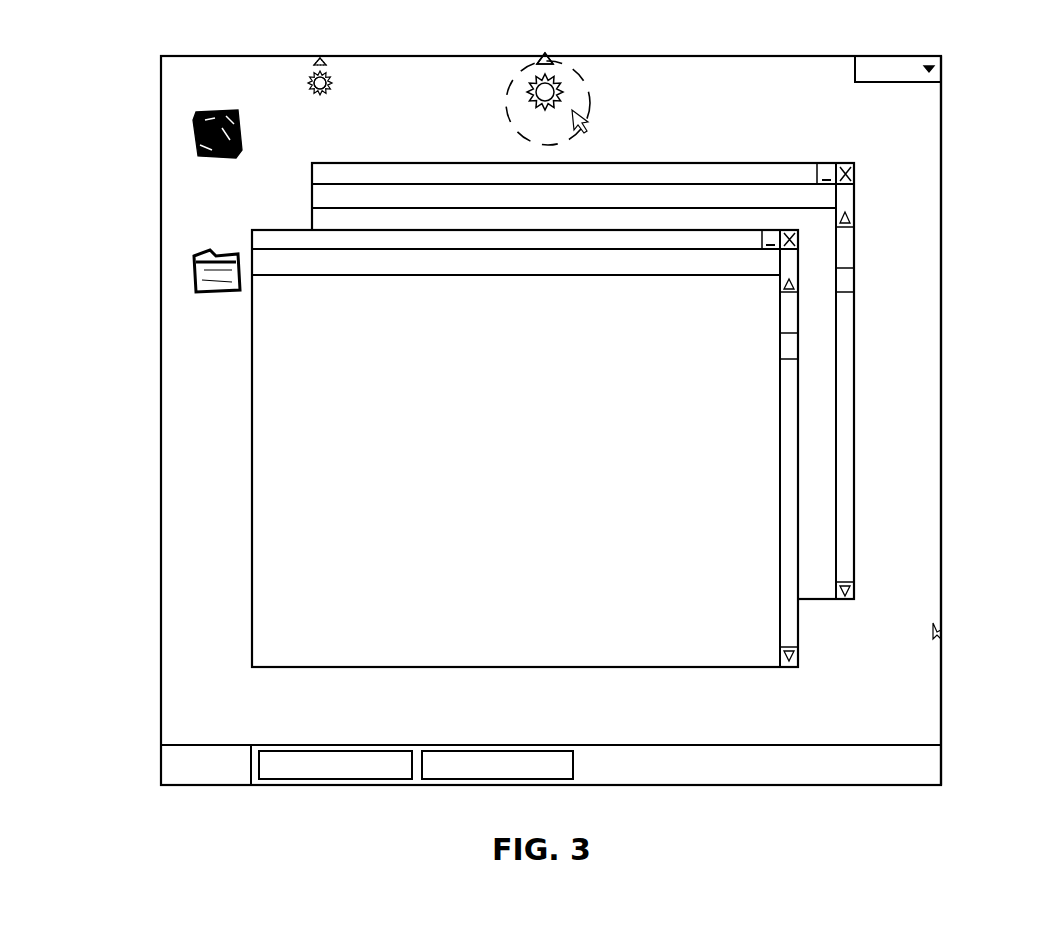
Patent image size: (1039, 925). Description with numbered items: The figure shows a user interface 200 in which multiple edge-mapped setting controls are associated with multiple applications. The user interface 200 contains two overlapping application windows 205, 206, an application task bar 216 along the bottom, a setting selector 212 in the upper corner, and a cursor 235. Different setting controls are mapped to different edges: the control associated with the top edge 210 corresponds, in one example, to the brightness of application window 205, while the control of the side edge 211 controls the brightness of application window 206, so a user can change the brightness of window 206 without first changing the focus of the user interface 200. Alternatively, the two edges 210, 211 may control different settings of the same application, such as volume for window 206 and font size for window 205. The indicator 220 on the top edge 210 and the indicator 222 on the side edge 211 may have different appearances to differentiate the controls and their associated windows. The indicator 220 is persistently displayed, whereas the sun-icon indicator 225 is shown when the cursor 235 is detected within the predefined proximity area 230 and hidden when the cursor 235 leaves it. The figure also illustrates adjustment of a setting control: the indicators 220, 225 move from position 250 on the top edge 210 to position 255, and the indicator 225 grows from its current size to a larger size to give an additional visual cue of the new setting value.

The user interface 200 is at (677, 721).
The application window 205 is at (818, 600).
The application window 206 is at (496, 394).
The top edge 210 is at (670, 57).
The side edge 211 is at (940, 368).
The setting selector 212 is at (942, 67).
The application task bar 216 is at (673, 776).
The indicator 220 is at (328, 60).
The indicator 222 is at (932, 634).
The indicator 225 is at (336, 88).
The proximity area 230 is at (506, 96).
The cursor 235 is at (584, 123).
The position 250 is at (324, 64).
The position 255 is at (543, 60).